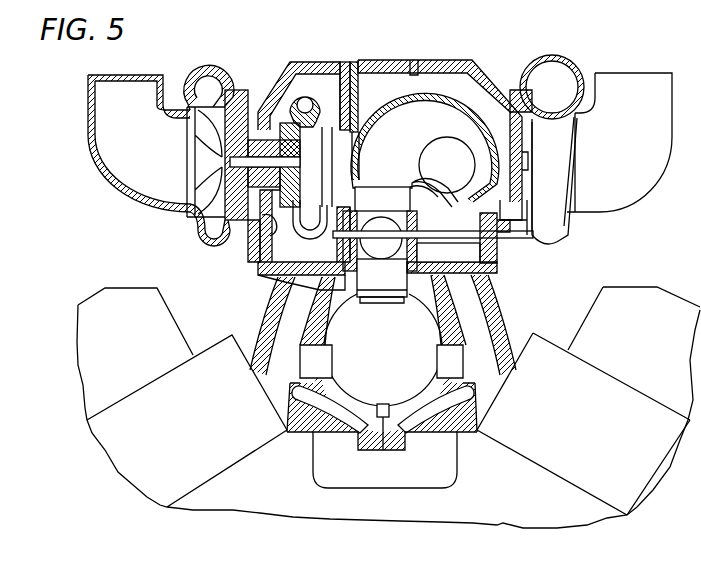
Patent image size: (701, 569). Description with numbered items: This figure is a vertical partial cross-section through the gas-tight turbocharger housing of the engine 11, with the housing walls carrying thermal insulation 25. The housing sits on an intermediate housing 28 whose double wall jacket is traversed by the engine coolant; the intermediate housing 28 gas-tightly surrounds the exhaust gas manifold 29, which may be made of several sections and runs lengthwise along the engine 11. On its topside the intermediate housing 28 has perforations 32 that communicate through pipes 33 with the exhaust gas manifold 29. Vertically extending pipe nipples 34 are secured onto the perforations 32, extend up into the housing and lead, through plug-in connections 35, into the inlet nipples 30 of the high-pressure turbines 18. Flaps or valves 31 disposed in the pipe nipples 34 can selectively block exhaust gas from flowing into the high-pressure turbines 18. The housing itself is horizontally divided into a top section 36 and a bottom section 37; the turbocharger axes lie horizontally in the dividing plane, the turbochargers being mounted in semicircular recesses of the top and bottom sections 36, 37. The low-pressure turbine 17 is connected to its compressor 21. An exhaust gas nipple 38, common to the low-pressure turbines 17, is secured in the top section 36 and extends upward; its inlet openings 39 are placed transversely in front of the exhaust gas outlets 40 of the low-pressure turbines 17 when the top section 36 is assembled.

The engine 11 is at (268, 493).
The low-pressure turbine 17 is at (296, 95).
The high-pressure turbine 18 is at (459, 175).
The compressor 21 is at (208, 80).
The thermal insulation 25 is at (278, 217).
The intermediate housing 28 is at (477, 307).
The exhaust gas manifold 29 is at (394, 343).
The inlet nipple 30 is at (397, 180).
The flap or valve 31 is at (352, 260).
The perforation 32 is at (333, 283).
The pipe 33 is at (393, 296).
The pipe nipple 34 is at (452, 257).
The plug-in connection 35 is at (421, 206).
The top section 36 is at (442, 60).
The bottom section 37 is at (503, 245).
The exhaust gas nipple 38 is at (356, 73).
The inlet opening 39 is at (357, 155).
The exhaust gas outlet 40 is at (328, 167).